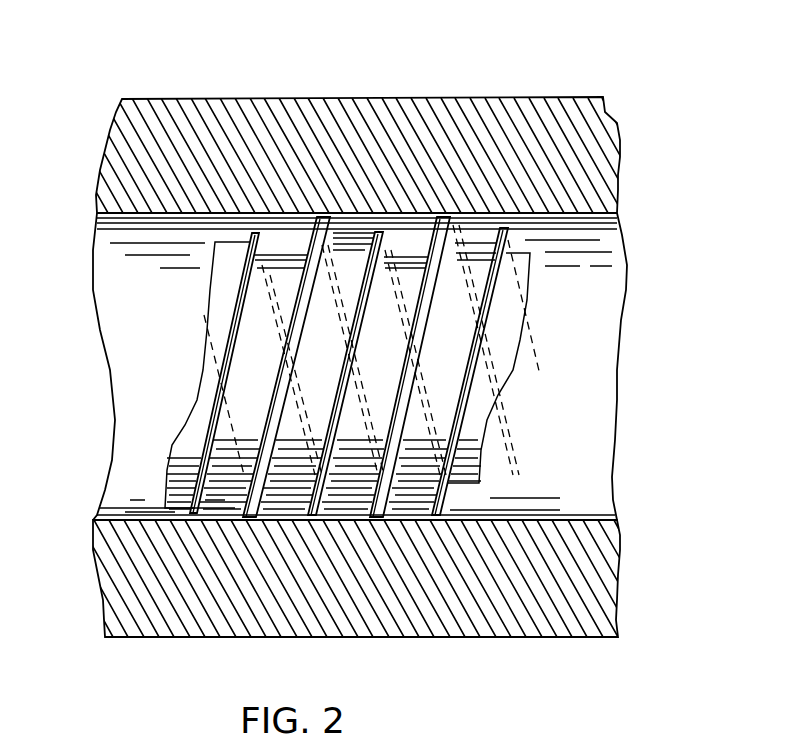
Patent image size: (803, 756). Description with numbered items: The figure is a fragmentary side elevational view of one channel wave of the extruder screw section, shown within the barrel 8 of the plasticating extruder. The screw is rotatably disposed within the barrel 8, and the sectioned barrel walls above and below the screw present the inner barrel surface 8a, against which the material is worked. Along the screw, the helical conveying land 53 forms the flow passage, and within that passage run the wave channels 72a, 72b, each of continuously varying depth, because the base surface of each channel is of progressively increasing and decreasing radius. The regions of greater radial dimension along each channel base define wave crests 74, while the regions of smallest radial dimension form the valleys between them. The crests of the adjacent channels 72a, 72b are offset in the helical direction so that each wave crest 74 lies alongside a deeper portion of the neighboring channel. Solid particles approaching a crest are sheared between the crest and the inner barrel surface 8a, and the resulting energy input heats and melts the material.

The barrel 8 is at (197, 97).
The inner barrel surface 8a is at (598, 222).
The conveying land 53 is at (250, 522).
The wave channel 72a is at (288, 243).
The wave channel 72b is at (414, 248).
The wave crest 74 is at (485, 238).